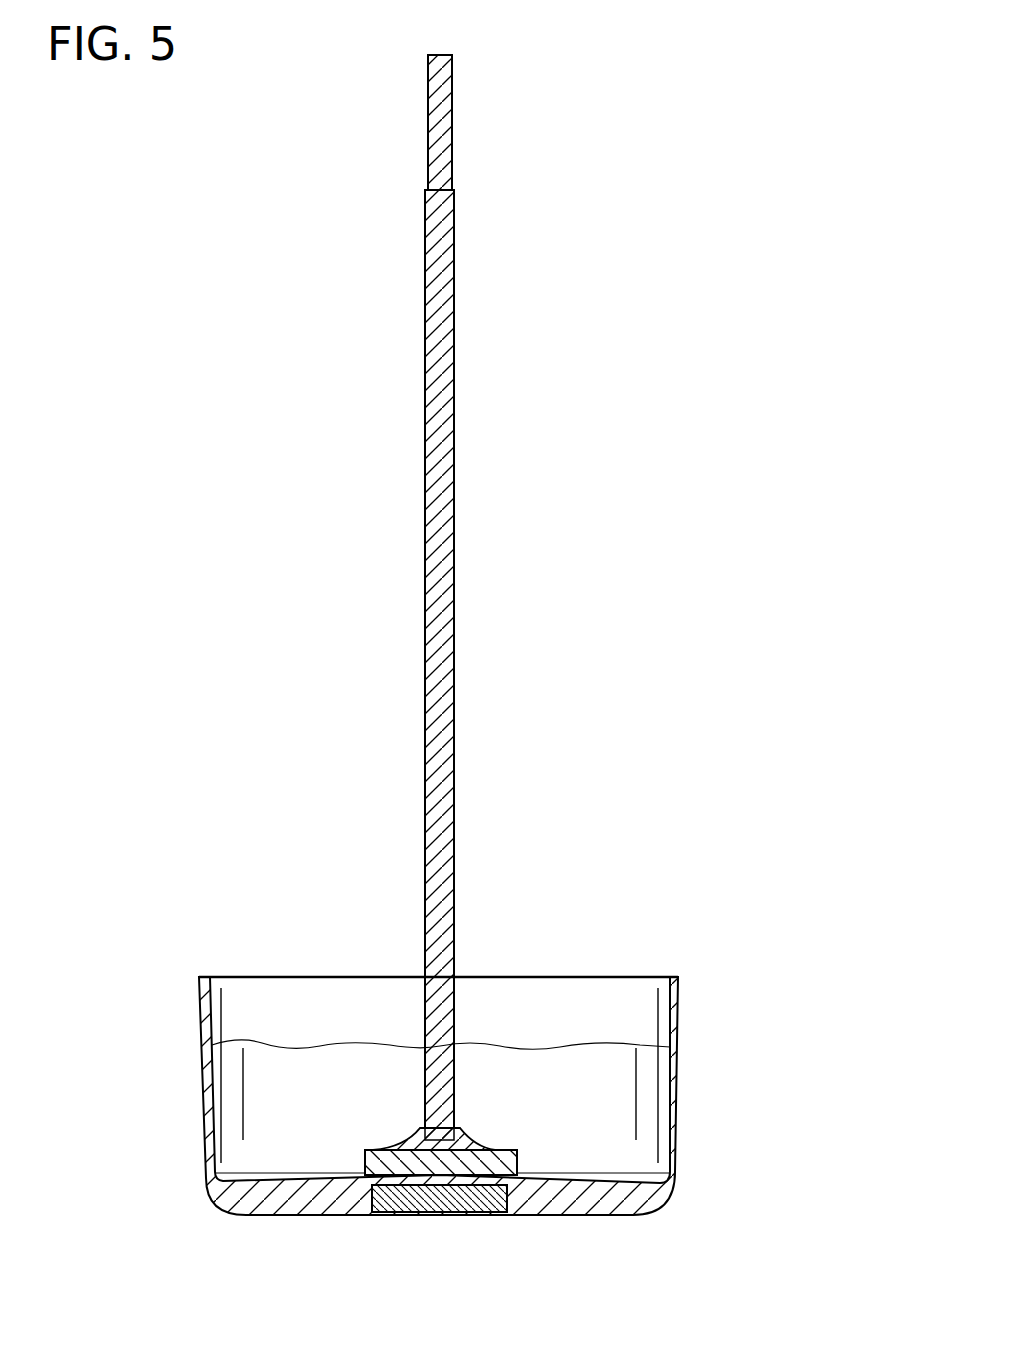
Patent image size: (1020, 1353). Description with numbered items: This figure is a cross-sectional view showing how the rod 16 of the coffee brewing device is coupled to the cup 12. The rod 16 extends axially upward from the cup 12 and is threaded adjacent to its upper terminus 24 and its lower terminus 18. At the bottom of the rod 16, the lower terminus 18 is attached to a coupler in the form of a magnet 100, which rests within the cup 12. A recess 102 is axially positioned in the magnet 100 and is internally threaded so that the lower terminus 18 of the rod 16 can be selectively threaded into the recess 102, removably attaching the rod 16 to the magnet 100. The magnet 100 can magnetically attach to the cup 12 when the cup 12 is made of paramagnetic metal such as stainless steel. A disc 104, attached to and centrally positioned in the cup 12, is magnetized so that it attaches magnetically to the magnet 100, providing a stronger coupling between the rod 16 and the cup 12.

The cup 12 is at (680, 1040).
The rod 16 is at (435, 655).
The lower terminus 18 is at (441, 1146).
The upper terminus 24 is at (432, 55).
The magnet 100 is at (500, 1163).
The recess 102 is at (457, 1128).
The disc 104 is at (504, 1204).